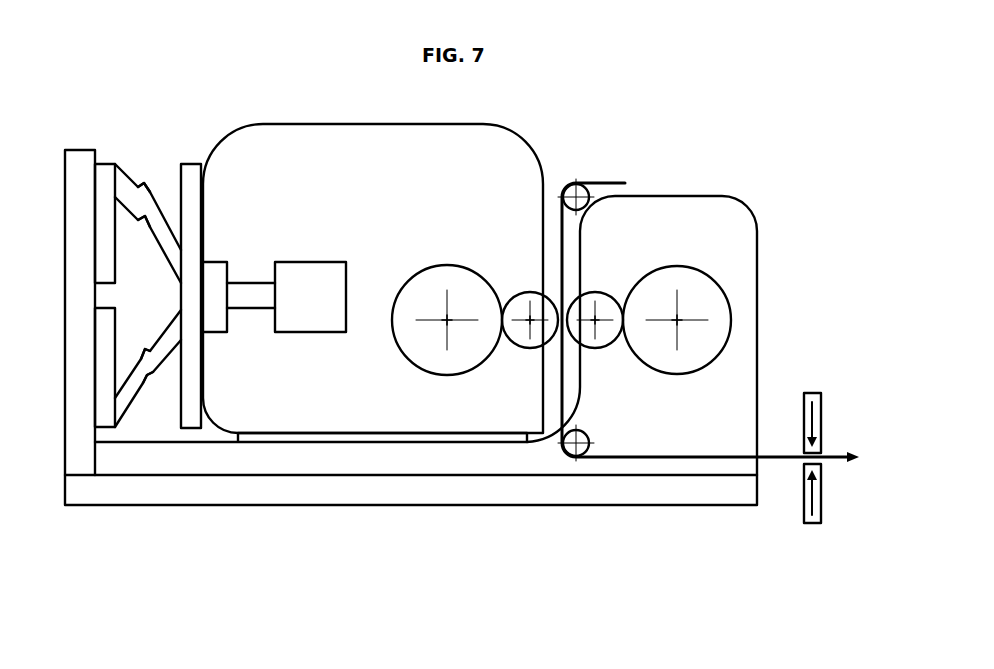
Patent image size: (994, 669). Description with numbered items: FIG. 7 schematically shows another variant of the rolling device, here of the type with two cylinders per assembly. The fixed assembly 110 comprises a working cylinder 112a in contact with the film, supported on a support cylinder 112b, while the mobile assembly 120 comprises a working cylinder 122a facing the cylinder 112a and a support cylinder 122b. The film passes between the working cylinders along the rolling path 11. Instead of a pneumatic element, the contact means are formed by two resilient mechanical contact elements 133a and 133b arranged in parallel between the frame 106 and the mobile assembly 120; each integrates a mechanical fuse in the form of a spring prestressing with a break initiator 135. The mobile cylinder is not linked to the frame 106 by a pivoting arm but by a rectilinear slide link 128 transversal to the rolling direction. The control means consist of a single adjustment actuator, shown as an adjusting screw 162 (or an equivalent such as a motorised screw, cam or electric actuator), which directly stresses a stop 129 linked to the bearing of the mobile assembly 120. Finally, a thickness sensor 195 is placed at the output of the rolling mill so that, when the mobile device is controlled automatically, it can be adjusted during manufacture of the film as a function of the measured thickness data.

The web / media path 11 is at (722, 325).
The frame 106 is at (658, 492).
The fixed assembly 110 is at (776, 243).
The working cylinder 112a is at (605, 307).
The support cylinder 112b is at (697, 290).
The mobile assembly 120 is at (331, 109).
The working cylinder 122a is at (520, 307).
The support cylinder 122b is at (428, 290).
The rectilinear slide link 128 is at (385, 446).
The stop 129 is at (215, 276).
The resilient mechanical contact element 133a is at (130, 198).
The resilient mechanical contact element 133b is at (128, 393).
The break initiator 135 is at (159, 202).
The adjusting screw 162 is at (310, 276).
The thickness sensor 195 is at (835, 493).